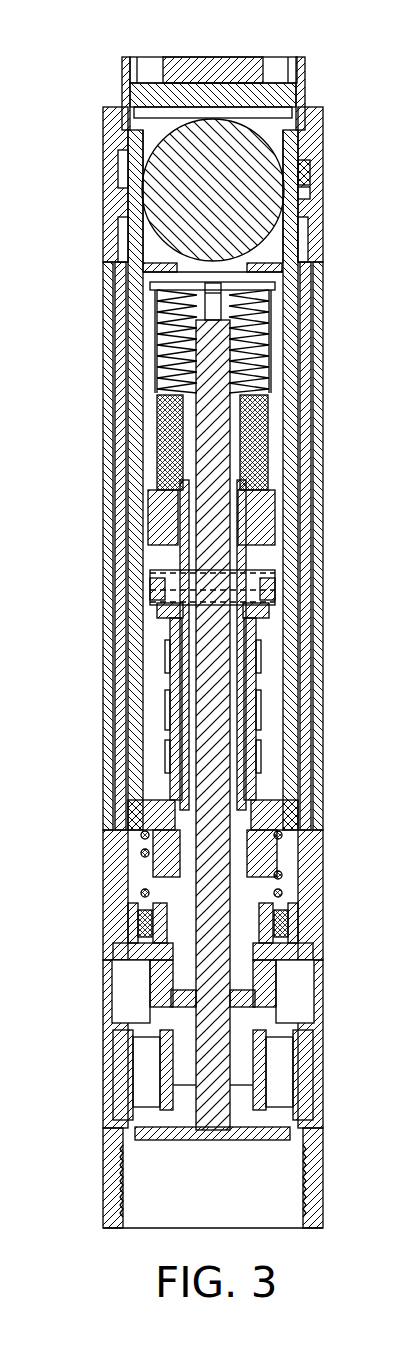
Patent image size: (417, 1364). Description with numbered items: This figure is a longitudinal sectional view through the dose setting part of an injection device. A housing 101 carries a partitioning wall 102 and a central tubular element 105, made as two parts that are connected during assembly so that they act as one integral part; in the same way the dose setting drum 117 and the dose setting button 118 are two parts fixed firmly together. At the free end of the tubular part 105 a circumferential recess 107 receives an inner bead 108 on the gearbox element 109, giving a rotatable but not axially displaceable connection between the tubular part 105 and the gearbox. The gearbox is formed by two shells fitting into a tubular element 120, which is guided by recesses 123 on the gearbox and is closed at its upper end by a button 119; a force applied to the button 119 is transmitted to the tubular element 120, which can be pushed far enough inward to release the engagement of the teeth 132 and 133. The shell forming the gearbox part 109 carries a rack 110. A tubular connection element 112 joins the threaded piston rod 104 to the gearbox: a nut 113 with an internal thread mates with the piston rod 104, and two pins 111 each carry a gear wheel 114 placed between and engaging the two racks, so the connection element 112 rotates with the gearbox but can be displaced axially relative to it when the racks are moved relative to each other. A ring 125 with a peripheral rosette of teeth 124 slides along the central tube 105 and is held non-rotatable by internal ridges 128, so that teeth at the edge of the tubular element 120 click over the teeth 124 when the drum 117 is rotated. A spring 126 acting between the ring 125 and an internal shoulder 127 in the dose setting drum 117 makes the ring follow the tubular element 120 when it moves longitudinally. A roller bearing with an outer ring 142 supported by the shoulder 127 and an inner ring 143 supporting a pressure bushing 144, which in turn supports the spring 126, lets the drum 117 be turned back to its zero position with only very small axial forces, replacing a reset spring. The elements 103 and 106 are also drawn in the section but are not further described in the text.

The housing 101 is at (318, 686).
The partitioning wall 102 is at (300, 1020).
The bottom sub 103 is at (245, 1185).
The threaded piston rod 104 is at (212, 758).
The tubular element 105 is at (300, 950).
The lugged sleeve 106 is at (258, 650).
The circumferential recess 107 is at (262, 610).
The inner bead 108 is at (275, 585).
The gearbox element 109 is at (300, 548).
The rack 110 is at (262, 348).
The pins 111 is at (272, 423).
The tubular connection element 112 is at (190, 768).
The nut 113 is at (258, 995).
The gear wheel 114 is at (280, 473).
The dose setting drum 117 is at (103, 527).
The dose setting button 118 is at (103, 150).
The button 119 is at (305, 57).
The tubular element 120 is at (285, 312).
The recesses 123 is at (277, 508).
The rosette of teeth 124 is at (275, 805).
The ring 125 is at (270, 850).
The spring 126 is at (283, 882).
The internal shoulder 127 is at (128, 958).
The internal ridges 128 is at (282, 835).
The teeth 132 is at (308, 192).
The teeth 133 is at (312, 178).
The outer ring 142 is at (138, 915).
The inner ring 143 is at (128, 948).
The pressure bushing 144 is at (128, 906).